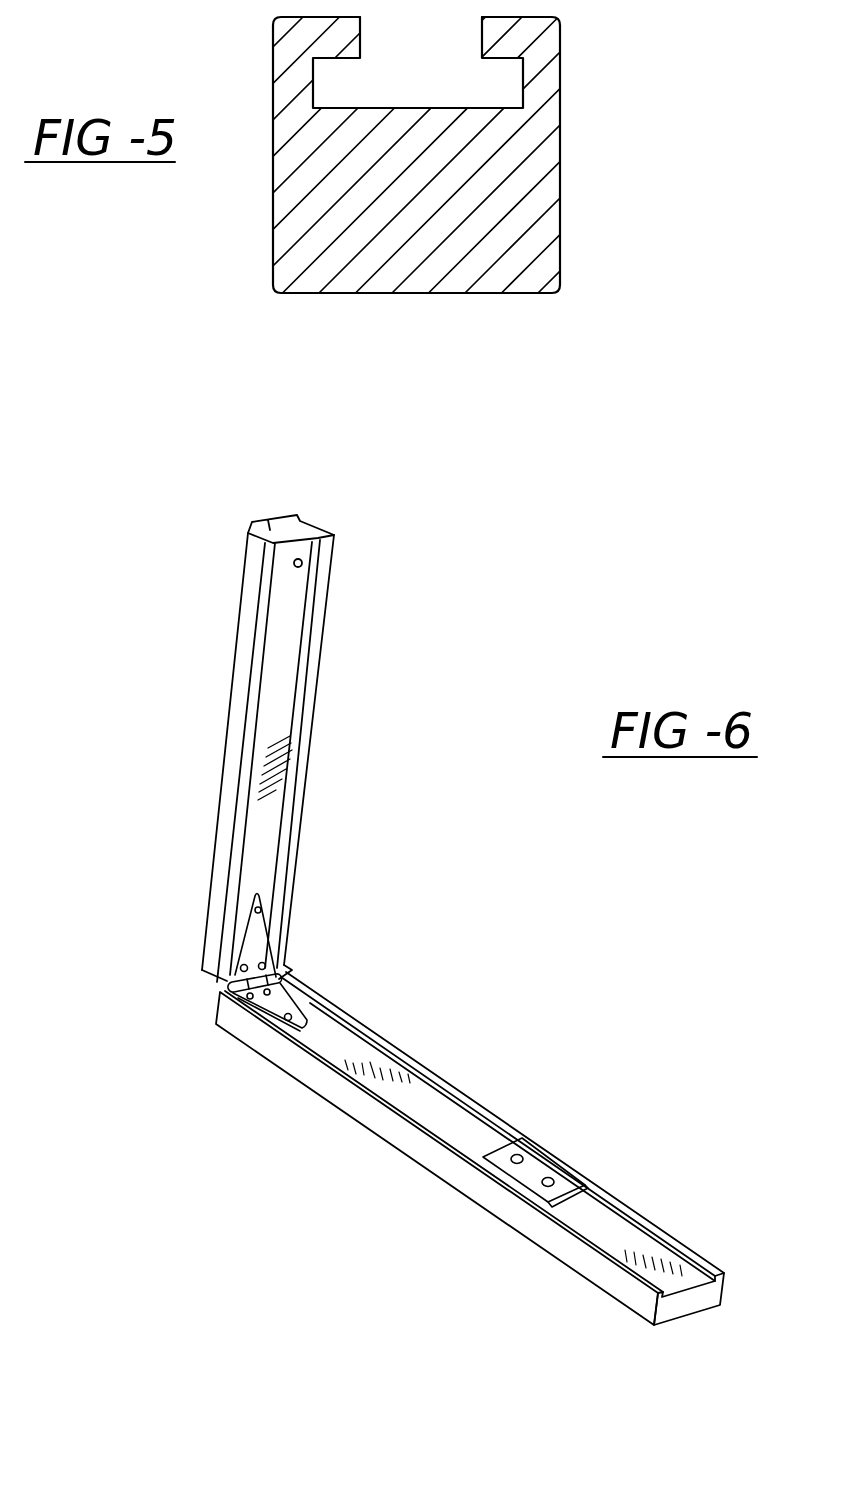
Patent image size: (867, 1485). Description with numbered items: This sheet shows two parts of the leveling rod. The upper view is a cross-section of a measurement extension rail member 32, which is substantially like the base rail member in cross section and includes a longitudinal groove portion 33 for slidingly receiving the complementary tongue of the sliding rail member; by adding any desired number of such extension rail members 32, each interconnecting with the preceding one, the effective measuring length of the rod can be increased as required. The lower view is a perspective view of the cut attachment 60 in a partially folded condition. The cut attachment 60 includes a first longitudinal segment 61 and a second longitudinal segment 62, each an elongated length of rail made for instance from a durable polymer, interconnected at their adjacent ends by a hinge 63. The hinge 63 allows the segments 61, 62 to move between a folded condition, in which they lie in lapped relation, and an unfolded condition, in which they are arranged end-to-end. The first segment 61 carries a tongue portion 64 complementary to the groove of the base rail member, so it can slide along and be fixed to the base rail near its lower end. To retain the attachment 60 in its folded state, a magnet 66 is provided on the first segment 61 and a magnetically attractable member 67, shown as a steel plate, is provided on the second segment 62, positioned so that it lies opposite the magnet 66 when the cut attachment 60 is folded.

In FIG. 5, the measurement extension rail member 32 is at (560, 197).
In FIG. 5, the longitudinal groove portion 33 is at (457, 84).
In FIG. 6, the cut attachment 60 is at (182, 1107).
In FIG. 6, the first longitudinal segment 61 is at (311, 712).
In FIG. 6, the second longitudinal segment 62 is at (470, 1148).
In FIG. 6, the hinge 63 is at (279, 979).
In FIG. 6, the tongue portion 64 is at (287, 515).
In FIG. 6, the magnet 66 is at (307, 568).
In FIG. 6, the magnetically attractable member 67 is at (530, 1178).